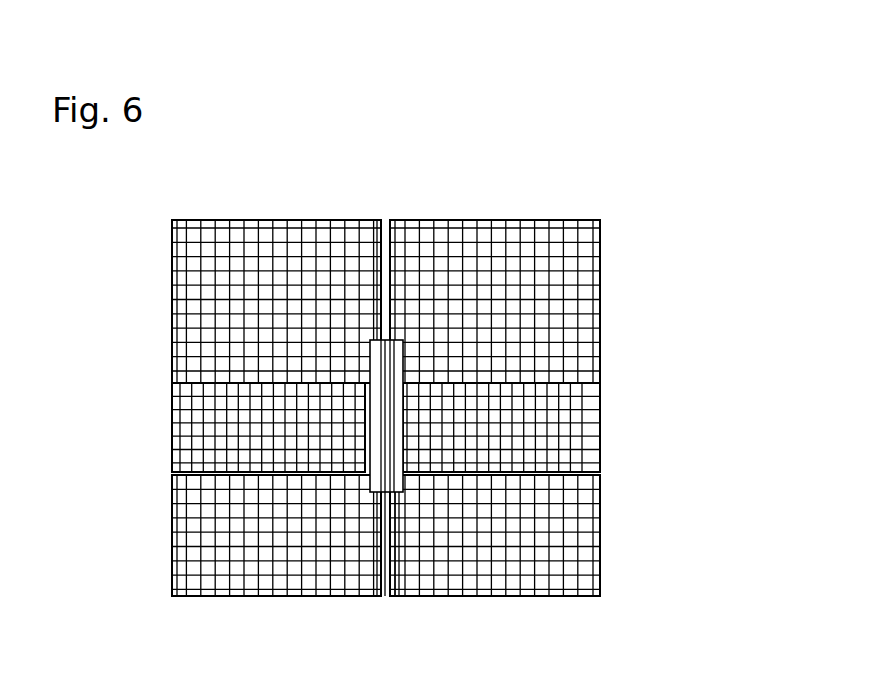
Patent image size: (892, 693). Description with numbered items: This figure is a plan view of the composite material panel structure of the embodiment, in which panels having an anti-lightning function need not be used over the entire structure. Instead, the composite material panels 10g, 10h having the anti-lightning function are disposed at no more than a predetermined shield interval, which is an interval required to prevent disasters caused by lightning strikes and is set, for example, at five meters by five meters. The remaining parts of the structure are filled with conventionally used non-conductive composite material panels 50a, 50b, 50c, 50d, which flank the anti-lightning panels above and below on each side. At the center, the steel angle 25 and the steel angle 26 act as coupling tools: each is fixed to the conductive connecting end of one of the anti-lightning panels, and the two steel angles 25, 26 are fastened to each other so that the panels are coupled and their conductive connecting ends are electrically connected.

The non-conductive composite material panel 50a is at (193, 279).
The non-conductive composite material panel 50b is at (183, 526).
The non-conductive composite material panel 50c is at (583, 298).
The non-conductive composite material panel 50d is at (587, 542).
The composite material panel 10g is at (187, 417).
The composite material panel 10h is at (582, 417).
The steel angle 25 is at (375, 482).
The steel angle 26 is at (393, 482).